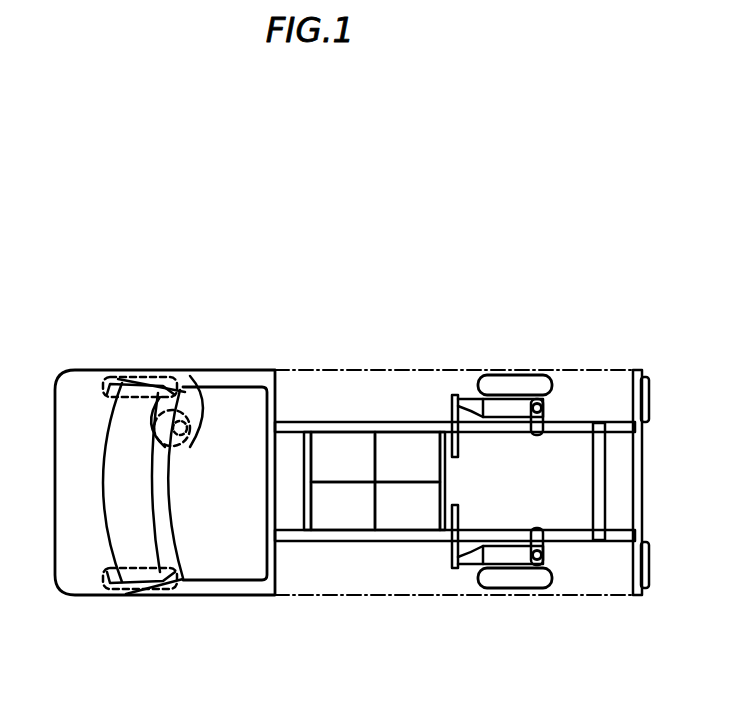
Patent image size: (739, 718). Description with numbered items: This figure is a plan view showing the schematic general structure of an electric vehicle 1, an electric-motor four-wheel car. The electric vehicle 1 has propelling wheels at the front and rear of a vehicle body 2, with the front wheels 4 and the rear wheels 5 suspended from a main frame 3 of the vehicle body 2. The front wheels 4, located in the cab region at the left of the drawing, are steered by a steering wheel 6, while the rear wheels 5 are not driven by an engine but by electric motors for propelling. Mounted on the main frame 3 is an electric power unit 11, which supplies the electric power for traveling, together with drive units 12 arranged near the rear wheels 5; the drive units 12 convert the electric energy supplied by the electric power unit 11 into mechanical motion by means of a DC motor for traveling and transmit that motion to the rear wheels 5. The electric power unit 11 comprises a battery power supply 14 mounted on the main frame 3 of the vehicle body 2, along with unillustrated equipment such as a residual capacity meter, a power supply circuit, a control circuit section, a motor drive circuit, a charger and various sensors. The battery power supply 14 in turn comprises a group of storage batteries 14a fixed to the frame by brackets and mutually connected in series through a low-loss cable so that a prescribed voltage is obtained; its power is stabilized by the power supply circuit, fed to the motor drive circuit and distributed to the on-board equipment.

The electric vehicle 1 is at (58, 342).
The vehicle body 2 is at (237, 380).
The main frame 3 is at (590, 424).
The front wheels 4 is at (150, 385).
The rear wheels 5 is at (510, 381).
The steering wheel 6 is at (195, 392).
The electric power unit 11 is at (343, 548).
The drive units 12 is at (466, 392).
The battery power supply 14 is at (343, 428).
The storage batteries 14a is at (352, 442).